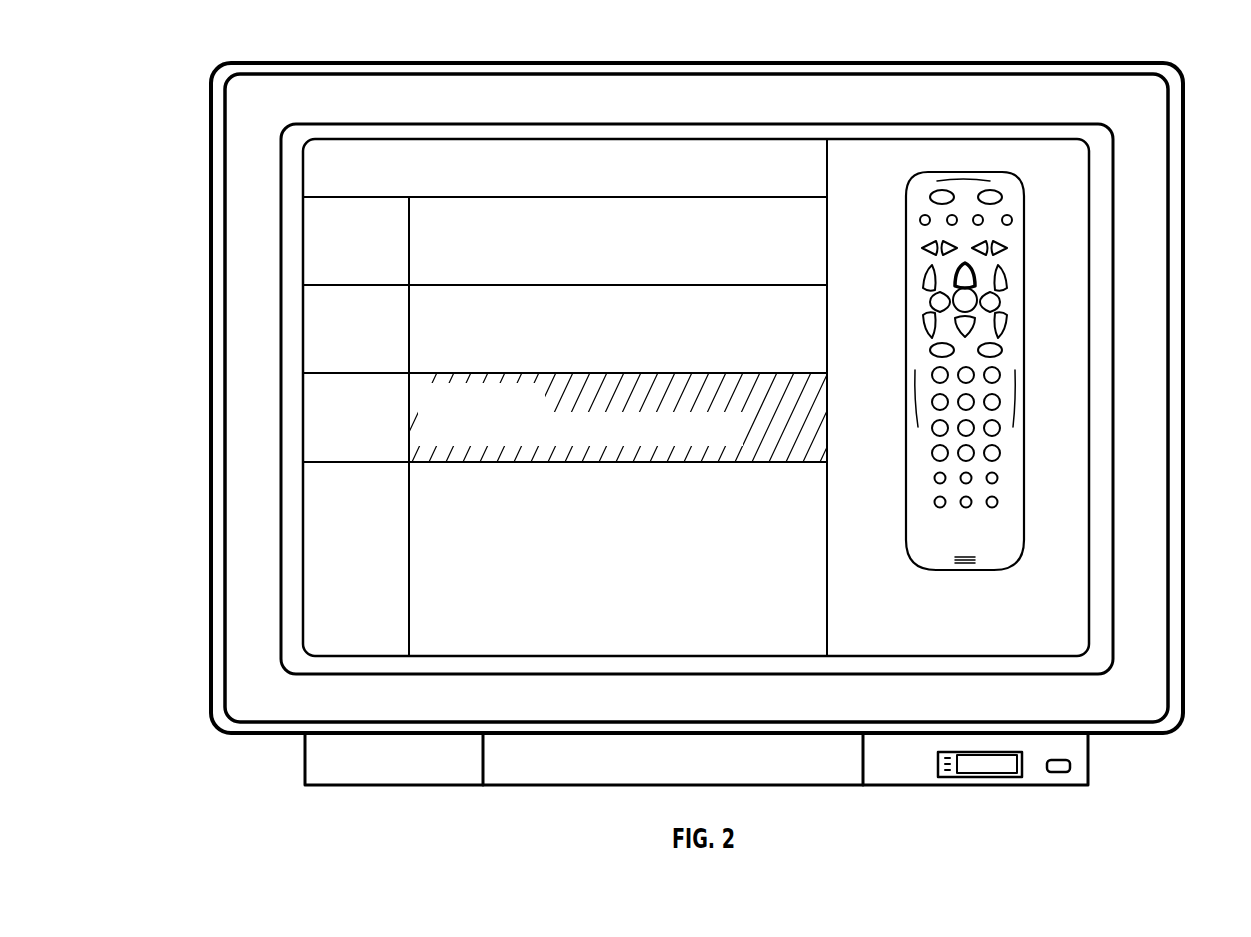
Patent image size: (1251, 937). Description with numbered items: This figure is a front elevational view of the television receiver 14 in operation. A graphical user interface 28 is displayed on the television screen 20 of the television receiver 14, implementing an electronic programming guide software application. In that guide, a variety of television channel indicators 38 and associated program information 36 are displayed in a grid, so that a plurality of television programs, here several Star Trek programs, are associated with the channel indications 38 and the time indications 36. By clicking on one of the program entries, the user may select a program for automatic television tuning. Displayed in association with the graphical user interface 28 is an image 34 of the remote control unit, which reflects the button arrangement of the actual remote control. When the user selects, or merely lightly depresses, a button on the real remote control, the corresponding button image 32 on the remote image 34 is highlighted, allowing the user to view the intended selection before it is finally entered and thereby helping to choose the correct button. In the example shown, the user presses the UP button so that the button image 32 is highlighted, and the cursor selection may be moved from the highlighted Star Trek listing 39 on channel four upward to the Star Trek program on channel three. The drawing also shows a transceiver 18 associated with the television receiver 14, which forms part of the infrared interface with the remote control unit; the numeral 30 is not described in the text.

The television receiver 14 is at (1182, 200).
The transceiver 18 is at (1000, 777).
The television screen 20 is at (1115, 247).
The graphical user interface 28 is at (793, 150).
The remote control 30 is at (968, 172).
The button image 32 is at (980, 284).
The image of the remote control unit 34 is at (1017, 385).
The program information 36 is at (605, 160).
The television channel indicators 38 is at (322, 257).
The highlighted Star Trek listing 39 is at (415, 424).